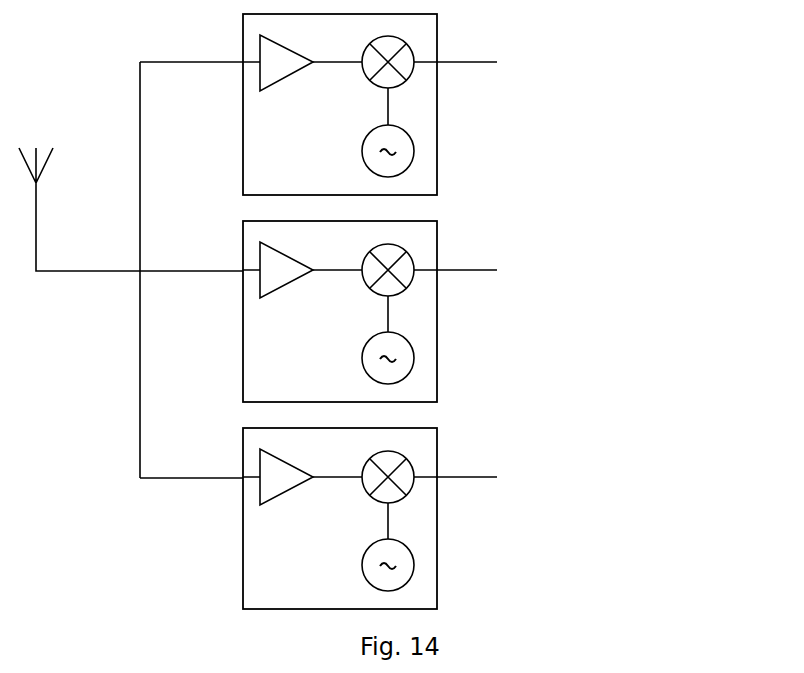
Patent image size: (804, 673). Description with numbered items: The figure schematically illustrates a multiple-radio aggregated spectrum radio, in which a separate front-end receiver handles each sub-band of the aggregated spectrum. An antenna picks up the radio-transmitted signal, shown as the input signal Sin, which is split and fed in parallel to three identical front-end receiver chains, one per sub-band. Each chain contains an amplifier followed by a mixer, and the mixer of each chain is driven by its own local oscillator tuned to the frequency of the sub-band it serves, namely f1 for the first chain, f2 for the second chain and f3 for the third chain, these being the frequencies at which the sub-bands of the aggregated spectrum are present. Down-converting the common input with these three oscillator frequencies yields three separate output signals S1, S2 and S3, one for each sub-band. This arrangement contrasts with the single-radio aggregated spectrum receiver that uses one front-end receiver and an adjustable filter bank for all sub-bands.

The input signal from antenna Sin is at (131, 211).
The first output signal channel S1 is at (374, 104).
The second output signal channel S2 is at (374, 311).
The third output signal channel S3 is at (374, 518).
The sub-band frequency f1 is at (371, 151).
The sub-band frequency f2 is at (371, 358).
The sub-band frequency f3 is at (371, 565).